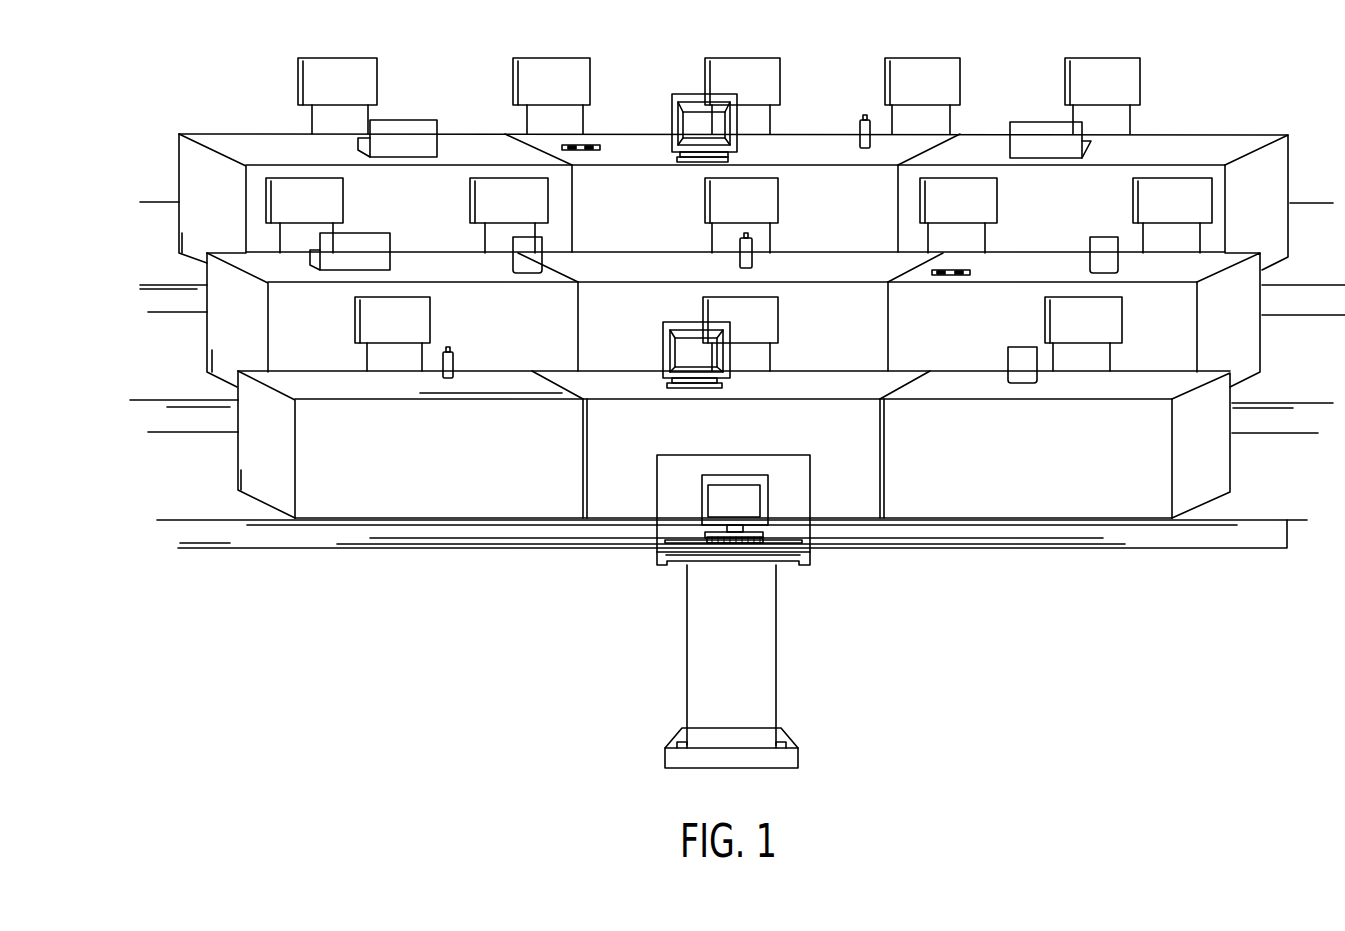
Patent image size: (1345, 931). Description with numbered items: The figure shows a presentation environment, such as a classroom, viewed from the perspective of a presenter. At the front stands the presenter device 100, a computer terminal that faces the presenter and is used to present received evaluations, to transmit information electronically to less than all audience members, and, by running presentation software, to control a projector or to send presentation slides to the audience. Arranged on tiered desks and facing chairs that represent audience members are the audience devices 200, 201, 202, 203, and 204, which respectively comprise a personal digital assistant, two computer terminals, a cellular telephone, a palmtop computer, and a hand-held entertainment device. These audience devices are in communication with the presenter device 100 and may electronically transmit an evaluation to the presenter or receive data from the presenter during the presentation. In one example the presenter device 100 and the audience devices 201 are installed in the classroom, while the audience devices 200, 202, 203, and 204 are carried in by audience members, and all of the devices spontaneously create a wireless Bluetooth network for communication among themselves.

The presenter device 100 is at (772, 508).
The audience device 200 is at (1007, 362).
The audience device 201 is at (668, 122).
The audience device 202 is at (455, 368).
The audience device 203 is at (391, 247).
The audience device 204 is at (963, 270).